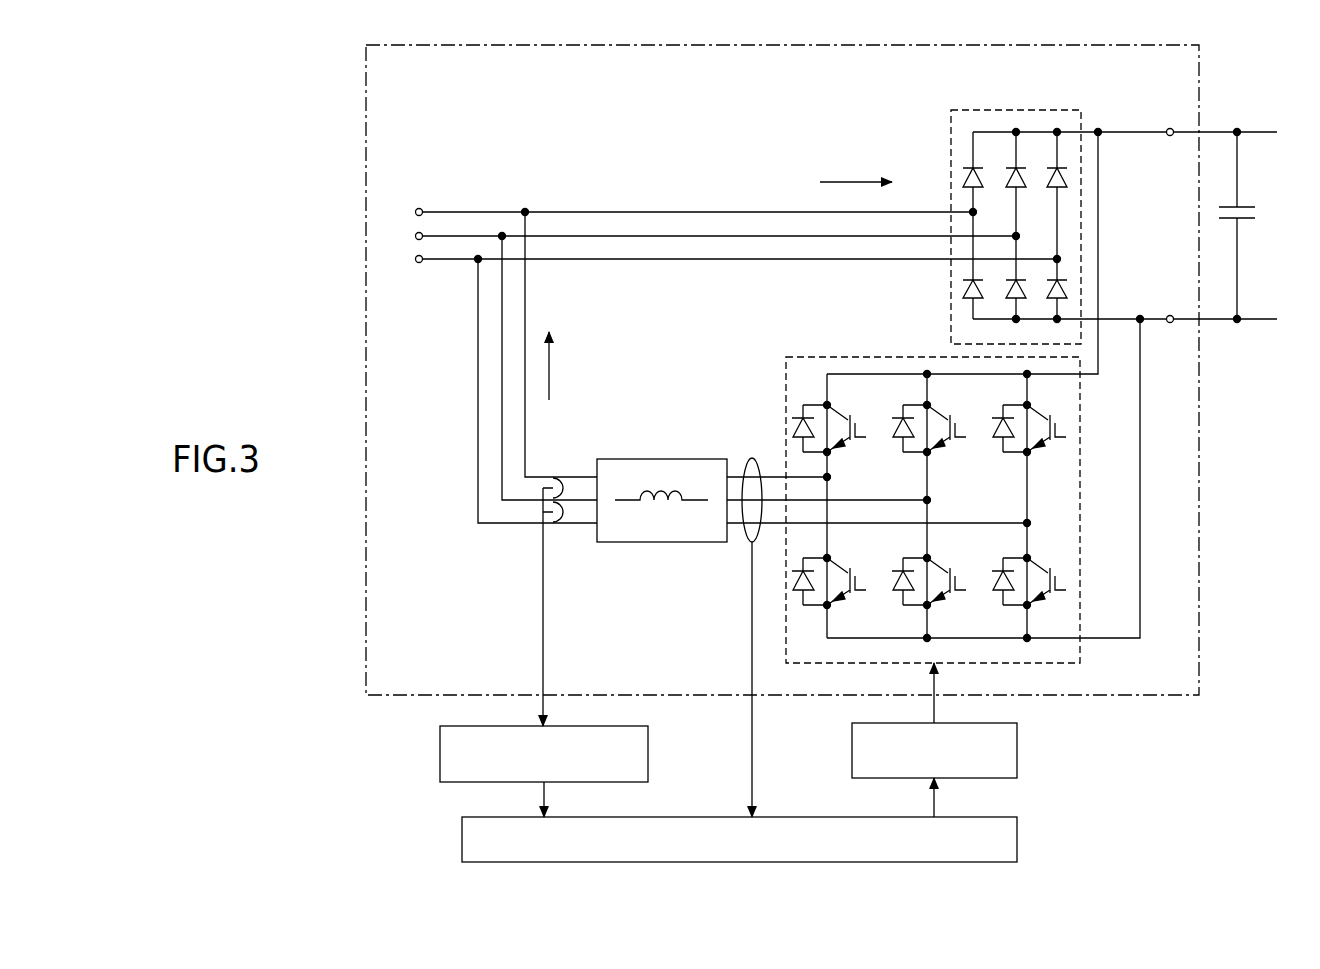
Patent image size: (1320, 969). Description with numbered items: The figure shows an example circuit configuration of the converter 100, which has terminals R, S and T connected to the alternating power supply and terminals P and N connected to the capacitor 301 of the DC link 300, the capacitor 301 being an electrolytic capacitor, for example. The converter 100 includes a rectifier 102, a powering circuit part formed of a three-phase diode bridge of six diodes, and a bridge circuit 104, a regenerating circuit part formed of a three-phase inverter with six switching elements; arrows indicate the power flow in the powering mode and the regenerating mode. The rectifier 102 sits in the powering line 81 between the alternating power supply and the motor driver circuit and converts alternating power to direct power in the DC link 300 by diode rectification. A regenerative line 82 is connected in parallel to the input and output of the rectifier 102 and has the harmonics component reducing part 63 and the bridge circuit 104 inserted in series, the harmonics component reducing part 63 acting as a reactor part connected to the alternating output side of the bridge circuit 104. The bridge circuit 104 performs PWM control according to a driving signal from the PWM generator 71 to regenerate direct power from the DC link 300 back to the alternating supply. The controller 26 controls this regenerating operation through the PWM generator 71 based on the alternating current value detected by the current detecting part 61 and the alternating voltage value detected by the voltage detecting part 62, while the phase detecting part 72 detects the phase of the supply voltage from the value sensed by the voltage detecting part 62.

The converter 100 is at (1200, 612).
The rectifier 102 is at (995, 108).
The bridge circuit 104 is at (830, 356).
The powering line 81 is at (750, 195).
The regenerative line 82 is at (470, 400).
The current detecting part 61 is at (750, 457).
The voltage detecting part 62 is at (553, 477).
The harmonics component reducing part 63 is at (662, 459).
The PWM generator 71 is at (1018, 748).
The phase detecting part 72 is at (650, 752).
The controller 26 is at (1018, 835).
The DC link 300 is at (1238, 330).
The capacitor 301 is at (1246, 206).